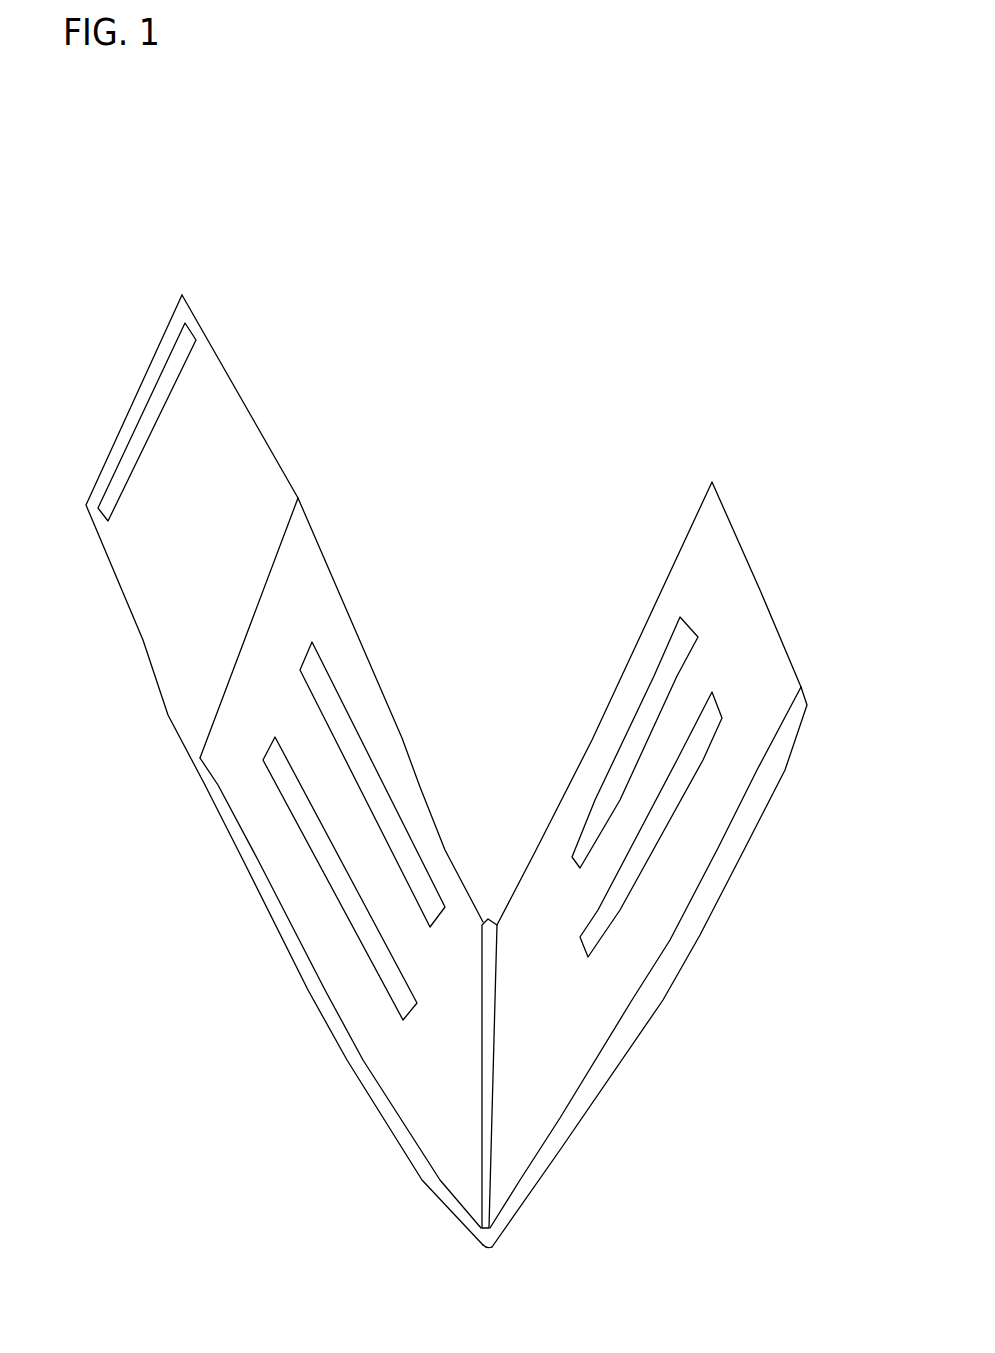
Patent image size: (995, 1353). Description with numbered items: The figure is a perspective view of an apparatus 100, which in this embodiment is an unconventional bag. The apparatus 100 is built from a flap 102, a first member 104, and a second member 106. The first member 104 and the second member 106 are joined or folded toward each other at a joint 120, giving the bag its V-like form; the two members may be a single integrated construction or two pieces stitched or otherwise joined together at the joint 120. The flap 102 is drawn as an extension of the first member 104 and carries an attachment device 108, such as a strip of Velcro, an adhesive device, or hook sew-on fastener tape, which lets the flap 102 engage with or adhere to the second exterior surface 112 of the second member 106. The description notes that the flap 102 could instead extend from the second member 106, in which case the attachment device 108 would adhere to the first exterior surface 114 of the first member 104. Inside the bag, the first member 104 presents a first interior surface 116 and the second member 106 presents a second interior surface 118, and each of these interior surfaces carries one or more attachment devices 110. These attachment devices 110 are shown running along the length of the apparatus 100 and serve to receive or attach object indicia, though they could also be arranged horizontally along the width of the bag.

The apparatus 100 is at (462, 380).
The flap 102 is at (158, 634).
The first member 104 is at (307, 590).
The second member 106 is at (698, 550).
The attachment device 108 is at (178, 348).
The attachment devices 110 is at (582, 865).
The second exterior surface 112 is at (727, 880).
The first exterior surface 114 is at (287, 940).
The first interior surface 116 is at (451, 1091).
The second interior surface 118 is at (556, 1091).
The joint 120 is at (490, 1233).